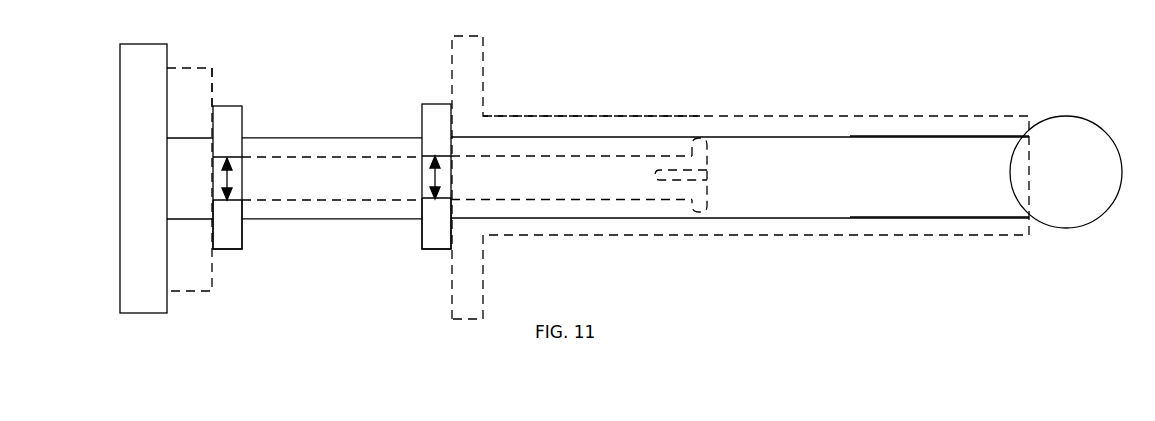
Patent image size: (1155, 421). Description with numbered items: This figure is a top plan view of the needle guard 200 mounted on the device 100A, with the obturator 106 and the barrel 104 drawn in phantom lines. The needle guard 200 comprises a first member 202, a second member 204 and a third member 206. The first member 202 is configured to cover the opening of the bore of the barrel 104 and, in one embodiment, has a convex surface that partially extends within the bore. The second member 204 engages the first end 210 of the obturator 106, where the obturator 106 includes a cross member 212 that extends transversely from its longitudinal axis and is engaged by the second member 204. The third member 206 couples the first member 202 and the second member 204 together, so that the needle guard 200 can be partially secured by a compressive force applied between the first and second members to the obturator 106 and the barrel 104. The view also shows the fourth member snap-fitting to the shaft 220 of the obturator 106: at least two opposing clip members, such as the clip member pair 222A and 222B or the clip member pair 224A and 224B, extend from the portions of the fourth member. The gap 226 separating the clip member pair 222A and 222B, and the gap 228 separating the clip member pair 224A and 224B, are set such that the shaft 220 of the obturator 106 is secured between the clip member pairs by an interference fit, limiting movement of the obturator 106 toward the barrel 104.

The needle guard 200 is at (590, 160).
The first member 202 is at (1077, 135).
The second member 204 is at (130, 158).
The third member 206 is at (907, 150).
The first end 210 is at (177, 72).
The cross member 212 is at (206, 73).
The shaft 220 is at (316, 160).
The clip member 222A is at (236, 117).
The clip member 222B is at (236, 245).
The clip member 224A is at (436, 107).
The clip member 224B is at (436, 245).
The gap 226 is at (233, 176).
The gap 228 is at (440, 175).
The barrel 104 is at (781, 115).
The device 100A is at (608, 115).
The obturator 106 is at (328, 190).